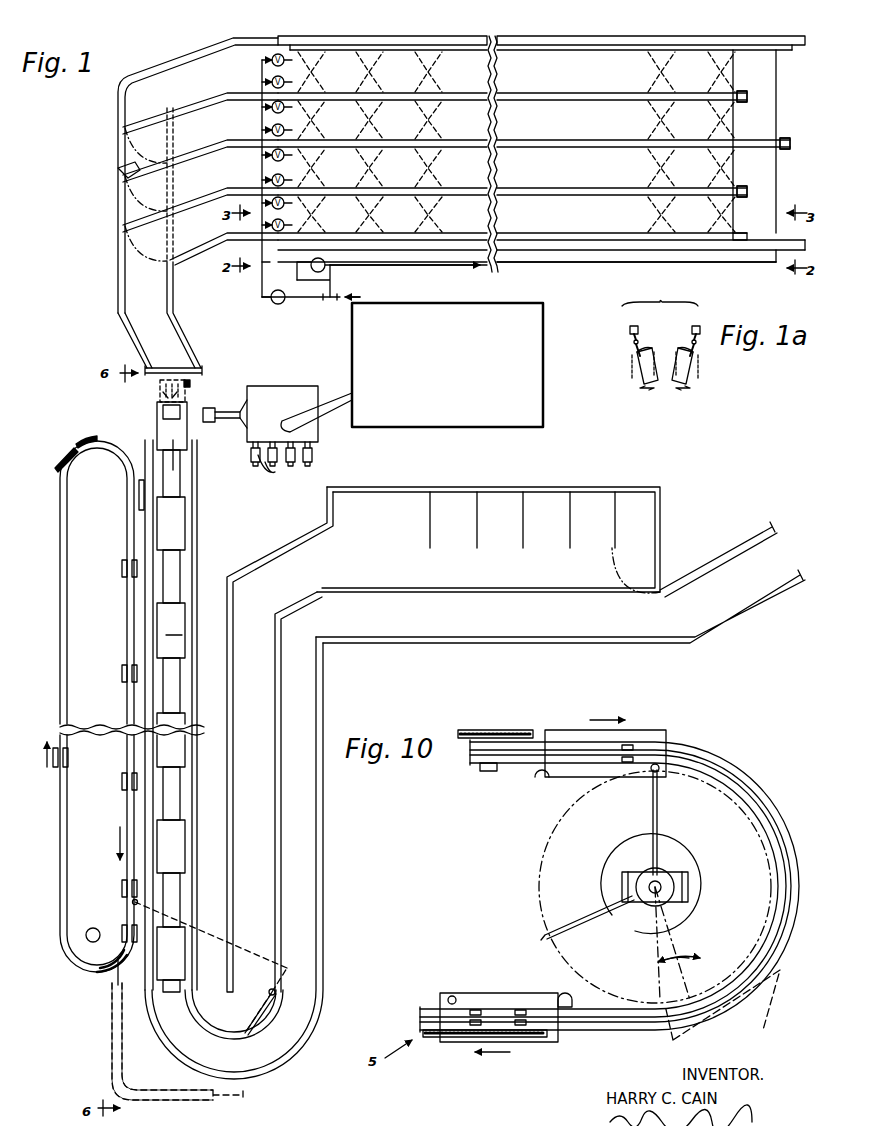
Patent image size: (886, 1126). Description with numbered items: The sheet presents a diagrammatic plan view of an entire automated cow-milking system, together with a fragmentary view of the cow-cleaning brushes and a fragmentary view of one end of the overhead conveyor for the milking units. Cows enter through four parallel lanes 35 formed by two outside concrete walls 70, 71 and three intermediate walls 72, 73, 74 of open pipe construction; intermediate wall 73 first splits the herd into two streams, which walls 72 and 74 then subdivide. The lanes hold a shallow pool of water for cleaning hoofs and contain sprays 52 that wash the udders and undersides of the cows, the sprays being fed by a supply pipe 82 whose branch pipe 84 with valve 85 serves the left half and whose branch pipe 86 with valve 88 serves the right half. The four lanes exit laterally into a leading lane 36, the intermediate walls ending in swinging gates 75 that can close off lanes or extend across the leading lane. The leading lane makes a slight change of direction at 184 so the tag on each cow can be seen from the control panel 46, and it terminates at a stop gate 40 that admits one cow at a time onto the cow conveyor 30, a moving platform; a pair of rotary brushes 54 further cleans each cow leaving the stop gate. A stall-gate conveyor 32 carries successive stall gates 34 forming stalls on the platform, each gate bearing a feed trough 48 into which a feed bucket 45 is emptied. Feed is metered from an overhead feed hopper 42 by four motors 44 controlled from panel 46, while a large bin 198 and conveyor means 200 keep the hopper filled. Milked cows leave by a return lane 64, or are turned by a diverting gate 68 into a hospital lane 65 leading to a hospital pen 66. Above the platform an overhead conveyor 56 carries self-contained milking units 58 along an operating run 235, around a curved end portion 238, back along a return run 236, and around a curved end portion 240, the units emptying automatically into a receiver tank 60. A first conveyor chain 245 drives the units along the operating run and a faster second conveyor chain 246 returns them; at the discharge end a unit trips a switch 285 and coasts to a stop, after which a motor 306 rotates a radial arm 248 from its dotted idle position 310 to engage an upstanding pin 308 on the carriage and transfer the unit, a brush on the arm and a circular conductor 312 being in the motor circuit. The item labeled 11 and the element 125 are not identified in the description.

In FIG. 1, the sample container tube 11 is at (190, 388).
In FIG. 1, the cow conveyor 30 is at (183, 686).
In FIG. 1, the stall-gate conveyor 32 is at (193, 568).
In FIG. 1, the stall gates 34 is at (183, 517).
In FIG. 1, the parallel lanes 35 is at (592, 65).
In FIG. 1, the leading lane 36 is at (125, 262).
In FIG. 1, the stop gate 40 is at (170, 367).
In FIG. 1, the feed hopper 42 is at (277, 392).
In FIG. 1, the motors 44 is at (312, 455).
In FIG. 1, the feed bucket 45 is at (208, 422).
In FIG. 1, the control panel 46 is at (137, 512).
In FIG. 1, the feed troughs 48 is at (188, 410).
In FIG. 1, the sprays 52 is at (444, 160).
In FIG. 1, the rotary brushes 54 is at (160, 404).
In FIG. 1A, the rotary brushes 54 is at (636, 365).
In FIG. 1, the overhead conveyor 56 is at (58, 945).
In FIG. 10, the overhead conveyor 56 is at (580, 1025).
In FIG. 1, the milking units 58 is at (90, 432).
In FIG. 10, the milking units 58 is at (660, 730).
In FIG. 1, the receiver tank 60 is at (118, 928).
In FIG. 1, the return lane 64 is at (300, 900).
In FIG. 1, the hospital lane 65 is at (258, 909).
In FIG. 1, the hospital pen 66 is at (515, 579).
In FIG. 1, the diverting gate 68 is at (273, 996).
In FIG. 1, the outside concrete wall 70 is at (540, 36).
In FIG. 1, the outside concrete wall 71 is at (570, 263).
In FIG. 1, the intermediate wall 72 is at (745, 94).
In FIG. 1, the intermediate wall 73 is at (788, 140).
In FIG. 1, the intermediate wall 74 is at (740, 198).
In FIG. 1, the swinging gates 75 is at (155, 114).
In FIG. 1, the supply pipe 82 is at (264, 264).
In FIG. 1, the branch pipe 84 is at (288, 300).
In FIG. 1, the valve 85 is at (270, 300).
In FIG. 1, the branch pipe 86 is at (368, 266).
In FIG. 1, the valve 88 is at (326, 270).
In FIG. 1, the gripper head 125 is at (160, 387).
In FIG. 1, the change in direction 184 is at (145, 330).
In FIG. 1, the bin 198 is at (352, 347).
In FIG. 1, the conveyor means 200 is at (338, 395).
In FIG. 1, the operating run 235 is at (128, 638).
In FIG. 1, the return run 236 is at (62, 628).
In FIG. 1, the curved end portion 238 is at (80, 971).
In FIG. 10, the curved end portion 238 is at (770, 822).
In FIG. 1, the curved end portion 240 is at (60, 450).
In FIG. 10, the first conveyor chain 245 is at (510, 730).
In FIG. 10, the second conveyor chain 246 is at (430, 1040).
In FIG. 10, the radial arm 248 is at (645, 816).
In FIG. 10, the switch 285 is at (487, 772).
In FIG. 10, the motor 306 is at (670, 880).
In FIG. 10, the upstanding pin 308 is at (660, 772).
In FIG. 10, the idle position 310 is at (575, 928).
In FIG. 10, the circular conductor 312 is at (672, 846).